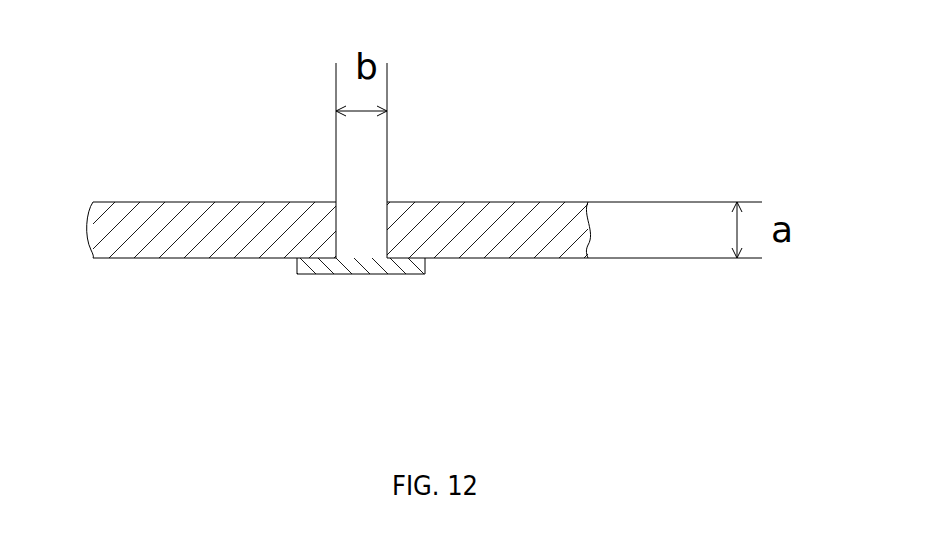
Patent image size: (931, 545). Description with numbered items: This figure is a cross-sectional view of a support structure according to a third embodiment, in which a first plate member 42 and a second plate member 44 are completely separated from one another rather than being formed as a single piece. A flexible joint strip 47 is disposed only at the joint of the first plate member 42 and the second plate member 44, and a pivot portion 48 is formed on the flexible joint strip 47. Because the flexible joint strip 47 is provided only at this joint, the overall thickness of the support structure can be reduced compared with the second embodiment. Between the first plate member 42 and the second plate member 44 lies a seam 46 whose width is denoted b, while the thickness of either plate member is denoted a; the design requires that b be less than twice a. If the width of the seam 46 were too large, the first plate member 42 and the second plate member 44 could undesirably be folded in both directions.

The first plate member 42 is at (237, 232).
The second plate member 44 is at (523, 202).
The seam 46 is at (362, 217).
The flexible joint strip 47 is at (302, 276).
The pivot portion 48 is at (387, 275).